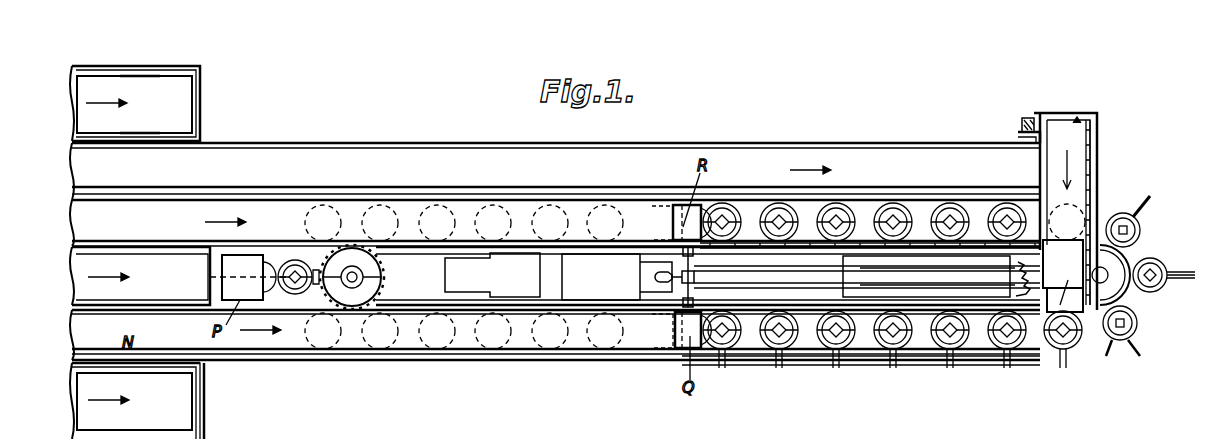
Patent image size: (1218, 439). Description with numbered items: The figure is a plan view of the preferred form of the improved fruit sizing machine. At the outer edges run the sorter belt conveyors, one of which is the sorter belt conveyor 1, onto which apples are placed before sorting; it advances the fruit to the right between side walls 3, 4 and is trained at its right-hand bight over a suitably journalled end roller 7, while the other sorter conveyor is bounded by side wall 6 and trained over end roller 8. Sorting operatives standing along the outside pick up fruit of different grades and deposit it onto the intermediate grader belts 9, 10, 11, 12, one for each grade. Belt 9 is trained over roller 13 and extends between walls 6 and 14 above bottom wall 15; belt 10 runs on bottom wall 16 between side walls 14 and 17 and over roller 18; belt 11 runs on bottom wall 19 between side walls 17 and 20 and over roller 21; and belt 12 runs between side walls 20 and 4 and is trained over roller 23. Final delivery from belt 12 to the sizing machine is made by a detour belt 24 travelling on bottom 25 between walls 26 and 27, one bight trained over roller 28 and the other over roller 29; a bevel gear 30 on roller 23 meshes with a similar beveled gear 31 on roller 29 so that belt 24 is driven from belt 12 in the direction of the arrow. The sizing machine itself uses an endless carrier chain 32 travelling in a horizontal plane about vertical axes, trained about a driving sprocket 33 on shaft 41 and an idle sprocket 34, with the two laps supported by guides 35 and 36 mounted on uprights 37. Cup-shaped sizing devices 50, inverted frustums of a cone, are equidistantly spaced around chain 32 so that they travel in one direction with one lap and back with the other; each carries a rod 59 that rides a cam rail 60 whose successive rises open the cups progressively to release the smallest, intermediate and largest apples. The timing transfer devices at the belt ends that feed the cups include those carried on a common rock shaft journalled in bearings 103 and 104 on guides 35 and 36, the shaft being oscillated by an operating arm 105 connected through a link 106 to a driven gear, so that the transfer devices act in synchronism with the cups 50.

The sorter belt conveyor 1 is at (178, 105).
The side wall 3 is at (157, 67).
The side wall 4 is at (144, 141).
The side wall 6 is at (150, 367).
The end roller 7 is at (175, 78).
The end roller 8 is at (660, 219).
The grader belt 9 is at (235, 340).
The grader belt 10 is at (158, 300).
The grader belt 11 is at (248, 225).
The grader belt 12 is at (238, 163).
The roller 13 is at (660, 356).
The side wall 14 is at (412, 300).
The bottom wall 15 is at (466, 356).
The bottom wall 16 is at (110, 302).
The side wall 17 is at (383, 277).
The roller 18 is at (210, 300).
The bottom wall 19 is at (346, 201).
The side wall 20 is at (396, 196).
The roller 21 is at (657, 200).
The roller 23 is at (1038, 140).
The detour belt 24 is at (1075, 156).
The bottom 25 is at (1091, 160).
The wall 26 is at (1042, 205).
The wall 27 is at (1098, 195).
The roller 28 is at (318, 147).
The roller 29 is at (1090, 128).
The bevel gear 30 is at (1022, 125).
The beveled gear 31 is at (1028, 118).
The chain 32 is at (908, 240).
The driving sprocket 33 is at (368, 283).
The idle sprocket 34 is at (1140, 322).
The guide 35 is at (867, 290).
The guide 36 is at (867, 261).
The upright 37 is at (546, 279).
The shaft 41 is at (372, 272).
The sizing device 50 is at (835, 360).
The rod 59 is at (725, 362).
The cam rail 60 is at (777, 364).
The bearing 103 is at (695, 302).
The bearing 104 is at (695, 253).
The operating arm 105 is at (666, 276).
The link 106 is at (979, 279).